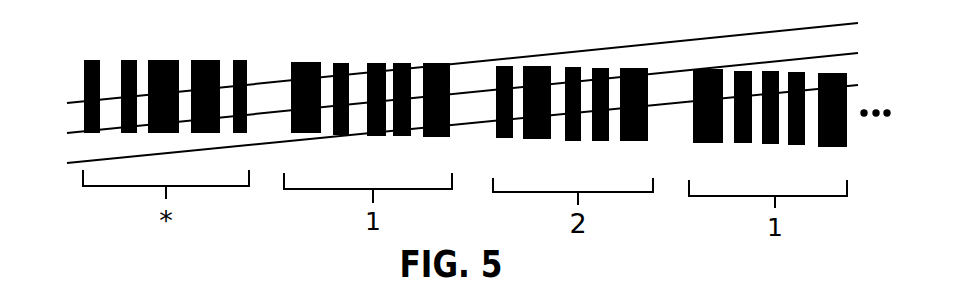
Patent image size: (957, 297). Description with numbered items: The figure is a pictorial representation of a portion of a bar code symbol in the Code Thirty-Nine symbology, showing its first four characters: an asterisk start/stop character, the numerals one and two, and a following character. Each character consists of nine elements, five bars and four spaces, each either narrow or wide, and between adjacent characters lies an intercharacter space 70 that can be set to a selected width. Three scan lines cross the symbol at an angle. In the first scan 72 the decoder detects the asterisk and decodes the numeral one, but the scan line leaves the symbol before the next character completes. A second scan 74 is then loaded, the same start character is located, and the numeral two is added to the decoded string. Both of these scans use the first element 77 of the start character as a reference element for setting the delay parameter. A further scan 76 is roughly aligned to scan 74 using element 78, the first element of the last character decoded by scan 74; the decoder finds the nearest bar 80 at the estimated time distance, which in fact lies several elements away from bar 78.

The intercharacter space 70 is at (464, 99).
The first scan 72 is at (76, 103).
The second scan 74 is at (75, 134).
The third scan 76 is at (75, 164).
The first element of the start character 77 is at (95, 60).
The first element of the last decoded character 78 is at (504, 66).
The nearest bar 80 is at (598, 142).